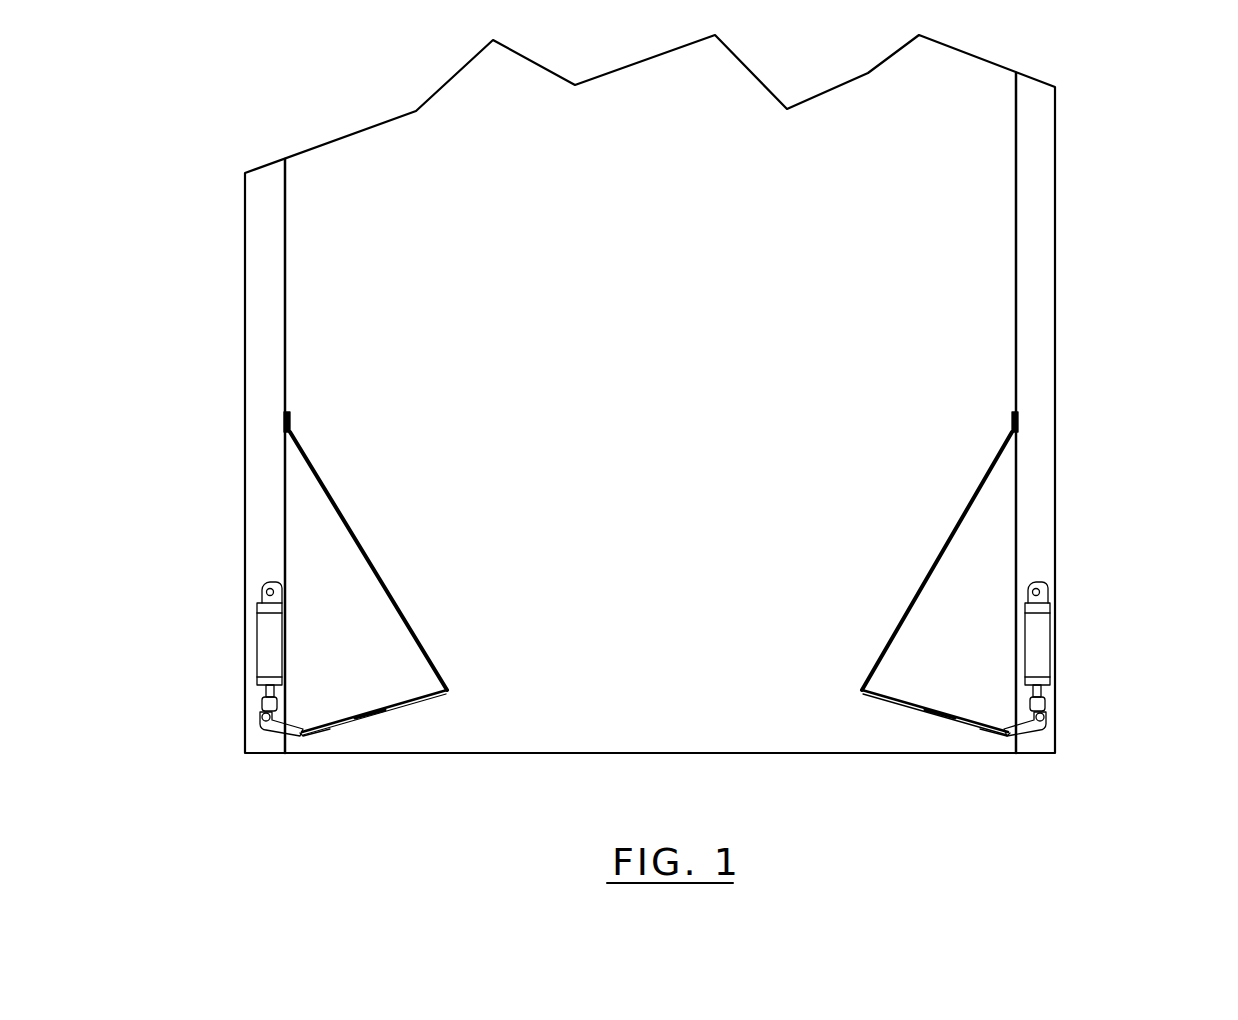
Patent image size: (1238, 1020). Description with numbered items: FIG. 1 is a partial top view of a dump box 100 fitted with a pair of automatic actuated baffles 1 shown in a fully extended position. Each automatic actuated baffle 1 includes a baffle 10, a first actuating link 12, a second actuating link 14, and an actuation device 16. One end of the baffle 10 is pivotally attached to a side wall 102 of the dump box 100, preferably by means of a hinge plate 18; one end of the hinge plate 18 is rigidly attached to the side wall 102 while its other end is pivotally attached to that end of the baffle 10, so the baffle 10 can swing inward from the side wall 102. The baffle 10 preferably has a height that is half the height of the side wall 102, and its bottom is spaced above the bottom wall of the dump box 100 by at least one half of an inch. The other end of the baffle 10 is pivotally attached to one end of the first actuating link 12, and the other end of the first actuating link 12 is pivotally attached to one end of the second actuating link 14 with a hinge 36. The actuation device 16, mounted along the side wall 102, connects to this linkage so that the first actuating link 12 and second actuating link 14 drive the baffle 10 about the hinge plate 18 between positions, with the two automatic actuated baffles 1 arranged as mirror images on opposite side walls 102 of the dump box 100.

The automatic actuated baffle 1 is at (178, 439).
The dump box 100 is at (678, 199).
The side wall 102 is at (287, 303).
The hinge plate 18 is at (290, 420).
The baffle 10 is at (388, 590).
The first actuating link 12 is at (400, 705).
The second actuating link 14 is at (328, 728).
The hinge 36 is at (368, 720).
The actuation device 16 is at (265, 660).